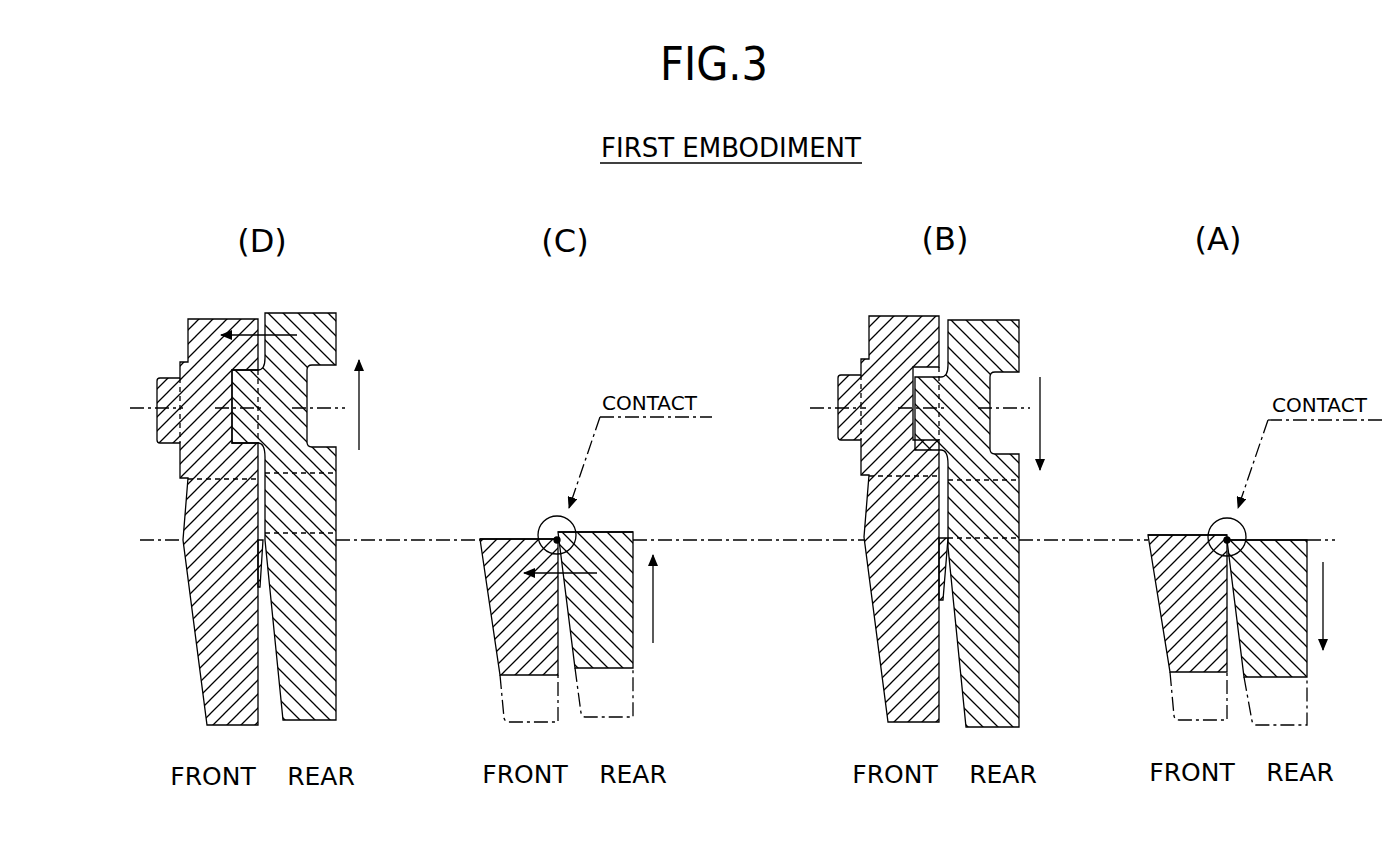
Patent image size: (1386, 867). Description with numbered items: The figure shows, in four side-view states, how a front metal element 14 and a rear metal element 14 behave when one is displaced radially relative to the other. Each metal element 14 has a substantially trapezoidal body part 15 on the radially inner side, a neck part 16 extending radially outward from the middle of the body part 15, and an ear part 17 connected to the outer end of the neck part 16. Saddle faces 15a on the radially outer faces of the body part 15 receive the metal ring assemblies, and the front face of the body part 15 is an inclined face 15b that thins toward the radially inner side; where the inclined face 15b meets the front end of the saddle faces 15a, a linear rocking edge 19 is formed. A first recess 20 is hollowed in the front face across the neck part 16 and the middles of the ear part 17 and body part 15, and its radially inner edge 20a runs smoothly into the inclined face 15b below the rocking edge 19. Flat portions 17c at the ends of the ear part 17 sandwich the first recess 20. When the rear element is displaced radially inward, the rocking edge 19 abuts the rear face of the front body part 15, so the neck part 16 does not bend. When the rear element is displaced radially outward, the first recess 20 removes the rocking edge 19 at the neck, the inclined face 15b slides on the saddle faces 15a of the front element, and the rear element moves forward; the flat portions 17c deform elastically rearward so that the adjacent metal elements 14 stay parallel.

The metal element 14 is at (210, 308).
The body part 15 is at (215, 637).
The saddle face 15a is at (510, 537).
The inclined face 15b is at (190, 648).
The neck part 16 is at (213, 511).
The ear part 17 is at (186, 424).
The flat portion 17c is at (256, 370).
The rocking edge 19 is at (258, 538).
The first recess 20 is at (258, 487).
The radially inner edge of first recess 20a is at (262, 587).